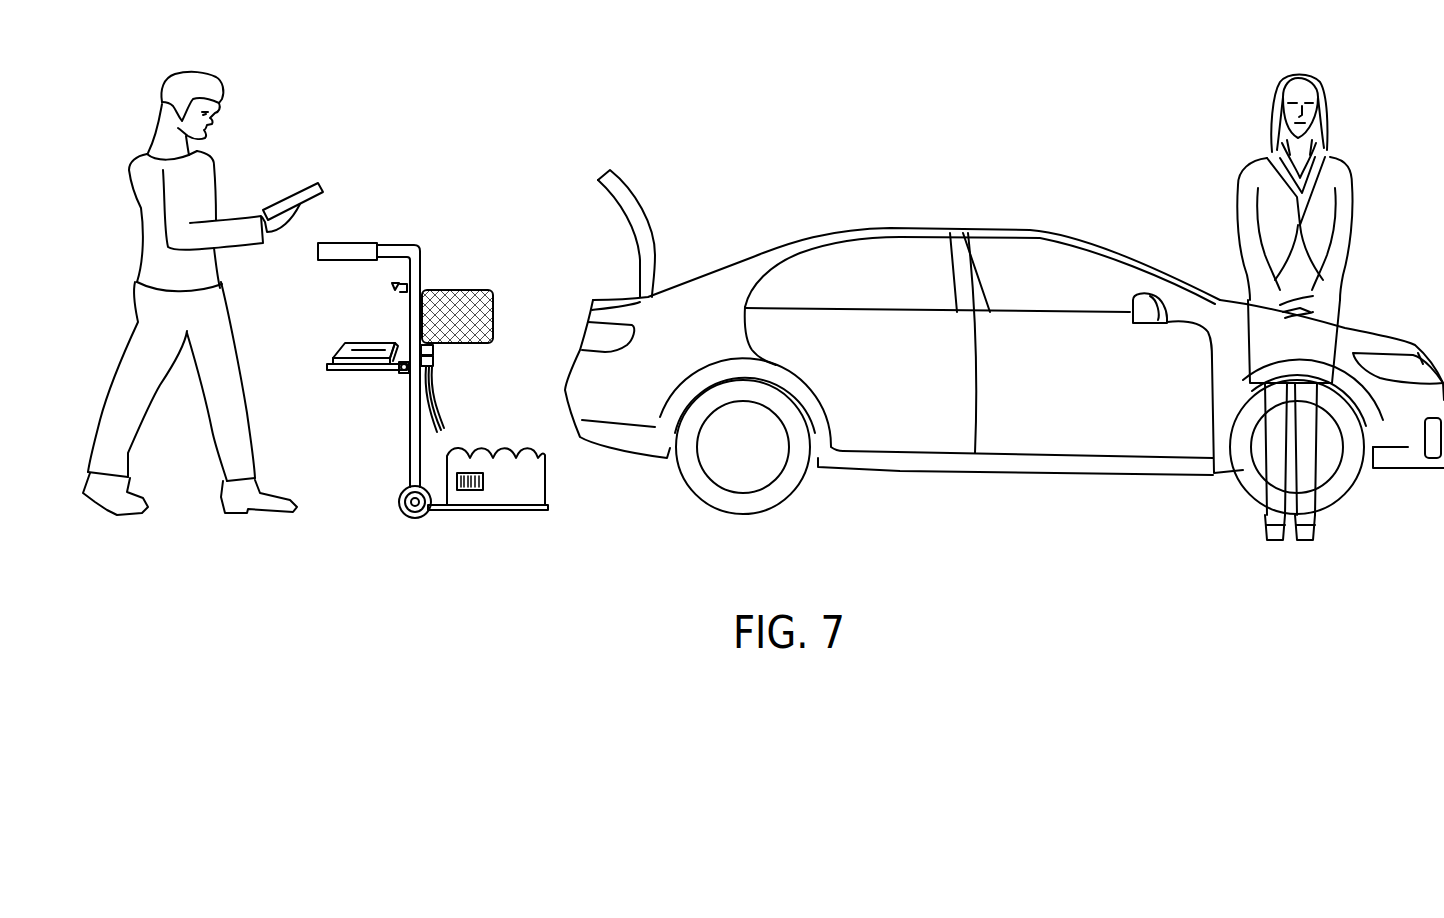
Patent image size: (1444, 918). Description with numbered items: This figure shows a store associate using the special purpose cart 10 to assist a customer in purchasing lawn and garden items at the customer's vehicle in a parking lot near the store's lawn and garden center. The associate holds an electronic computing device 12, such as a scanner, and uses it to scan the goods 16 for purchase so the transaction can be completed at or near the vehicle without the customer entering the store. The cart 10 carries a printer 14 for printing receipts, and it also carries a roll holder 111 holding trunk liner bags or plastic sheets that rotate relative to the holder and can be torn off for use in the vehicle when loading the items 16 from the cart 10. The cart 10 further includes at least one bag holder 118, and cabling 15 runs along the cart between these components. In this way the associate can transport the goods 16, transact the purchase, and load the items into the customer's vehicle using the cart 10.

The special purpose cart 10 is at (408, 195).
The electronic computing device 12 is at (312, 180).
The printer 14 is at (354, 341).
The cables 15 is at (437, 410).
The goods 16 is at (545, 488).
The roll holder 111 is at (434, 349).
The bag holder 118 is at (433, 365).